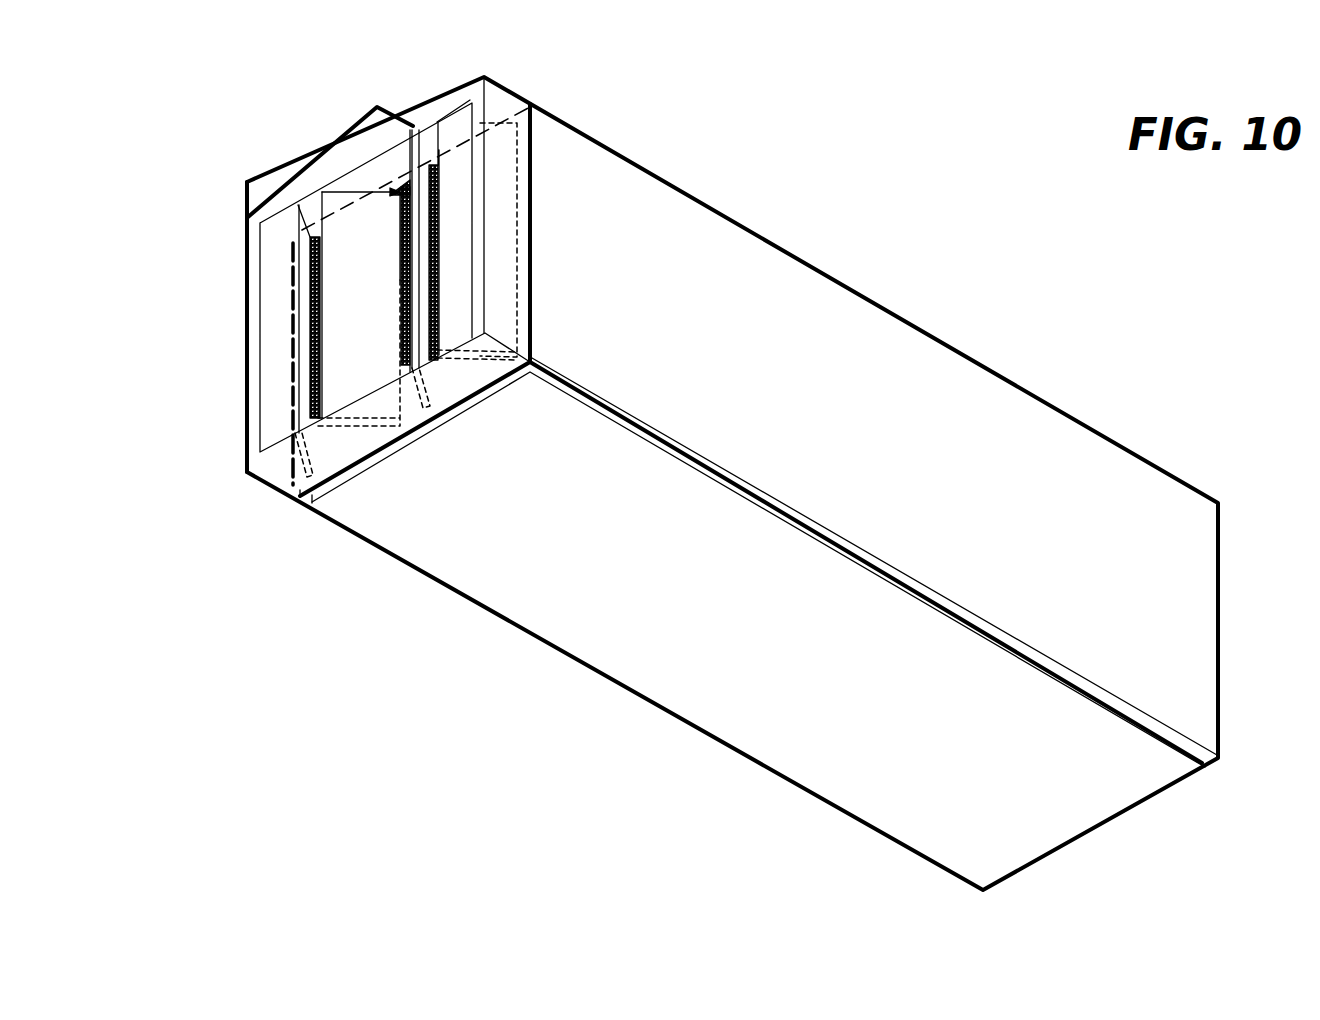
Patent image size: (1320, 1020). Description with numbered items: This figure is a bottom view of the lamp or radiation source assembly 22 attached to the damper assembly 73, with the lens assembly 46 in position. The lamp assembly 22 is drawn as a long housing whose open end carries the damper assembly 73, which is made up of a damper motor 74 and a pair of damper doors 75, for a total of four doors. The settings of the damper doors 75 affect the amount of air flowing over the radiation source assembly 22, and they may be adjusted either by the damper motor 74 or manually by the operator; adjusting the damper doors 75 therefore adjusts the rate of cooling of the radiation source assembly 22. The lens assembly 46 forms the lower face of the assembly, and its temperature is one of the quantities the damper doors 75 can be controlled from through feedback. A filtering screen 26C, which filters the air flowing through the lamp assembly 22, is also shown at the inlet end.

The lamp assembly 22 is at (802, 358).
The lens assembly 46 is at (668, 652).
The damper assembly 73 is at (208, 333).
The damper motor 74 is at (277, 160).
The damper doors 75 is at (313, 235).
The filtering screen 26C is at (407, 372).